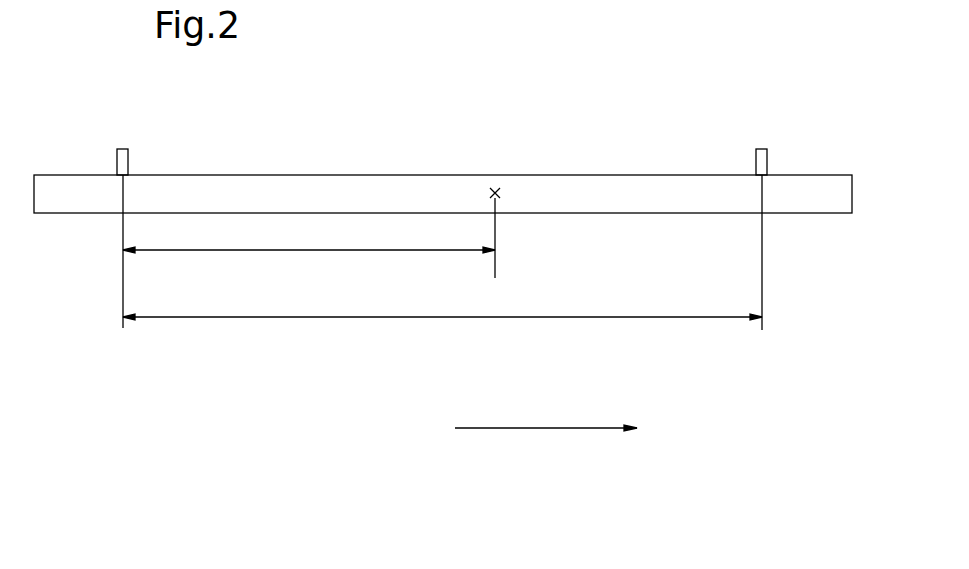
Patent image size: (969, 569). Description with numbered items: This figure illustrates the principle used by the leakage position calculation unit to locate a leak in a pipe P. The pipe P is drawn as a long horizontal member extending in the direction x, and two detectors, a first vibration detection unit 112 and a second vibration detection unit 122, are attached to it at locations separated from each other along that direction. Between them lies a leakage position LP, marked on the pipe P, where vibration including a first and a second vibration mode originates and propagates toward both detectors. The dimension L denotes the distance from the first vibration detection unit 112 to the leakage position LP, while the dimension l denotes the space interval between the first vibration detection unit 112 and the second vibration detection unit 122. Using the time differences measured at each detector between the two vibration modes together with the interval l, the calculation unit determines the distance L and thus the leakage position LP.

The first vibration detection unit 112 is at (128, 160).
The second vibration detection unit 122 is at (767, 160).
The pipe P is at (807, 203).
The leakage position LP is at (497, 186).
The distance from the first vibration detection unit to the leakage position L is at (309, 263).
The space interval between the first and second vibration detection units l is at (442, 331).
The direction in which the pipe extends x is at (546, 443).